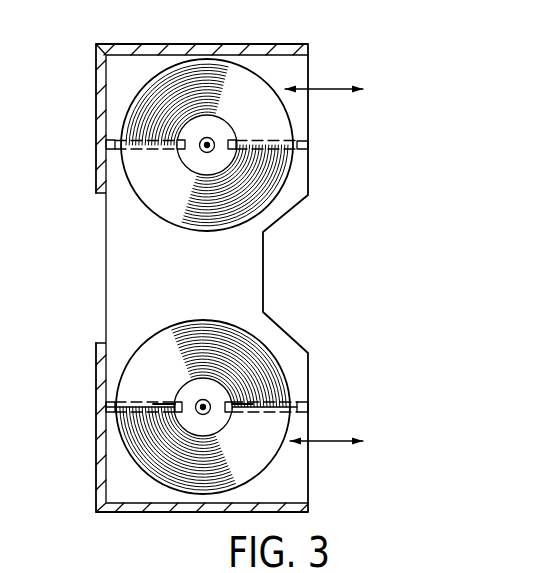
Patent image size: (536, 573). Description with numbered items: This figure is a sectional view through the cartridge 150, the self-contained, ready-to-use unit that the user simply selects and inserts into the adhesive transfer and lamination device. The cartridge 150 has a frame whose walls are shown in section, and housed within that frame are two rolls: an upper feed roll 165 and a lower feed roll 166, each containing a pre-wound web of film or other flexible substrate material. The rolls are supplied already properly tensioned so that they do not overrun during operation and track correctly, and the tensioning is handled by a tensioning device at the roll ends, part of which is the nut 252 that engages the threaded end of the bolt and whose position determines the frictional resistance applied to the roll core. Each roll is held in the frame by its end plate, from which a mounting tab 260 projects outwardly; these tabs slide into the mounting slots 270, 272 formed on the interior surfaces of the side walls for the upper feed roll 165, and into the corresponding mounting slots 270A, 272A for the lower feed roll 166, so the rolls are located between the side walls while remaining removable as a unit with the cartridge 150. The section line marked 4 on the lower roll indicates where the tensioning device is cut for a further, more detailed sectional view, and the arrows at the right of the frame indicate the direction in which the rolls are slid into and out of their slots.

The cartridge 150 is at (84, 163).
The upper feed roll 165 is at (220, 77).
The lower feed roll 166 is at (262, 443).
The mounting tab 260 is at (236, 147).
The mounting slot 270 is at (309, 145).
The mounting slot 272 is at (108, 145).
The mounting slot 270A is at (308, 406).
The mounting slot 272A is at (106, 407).
The section line 4- 4 is at (246, 394).
The nut 252 is at (17, 558).